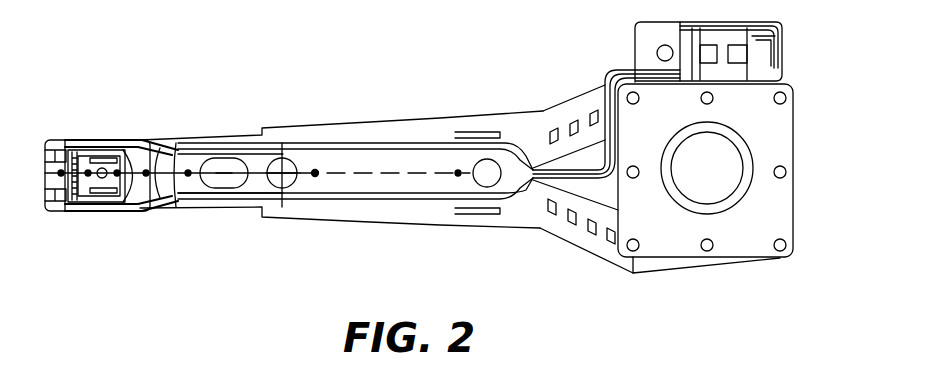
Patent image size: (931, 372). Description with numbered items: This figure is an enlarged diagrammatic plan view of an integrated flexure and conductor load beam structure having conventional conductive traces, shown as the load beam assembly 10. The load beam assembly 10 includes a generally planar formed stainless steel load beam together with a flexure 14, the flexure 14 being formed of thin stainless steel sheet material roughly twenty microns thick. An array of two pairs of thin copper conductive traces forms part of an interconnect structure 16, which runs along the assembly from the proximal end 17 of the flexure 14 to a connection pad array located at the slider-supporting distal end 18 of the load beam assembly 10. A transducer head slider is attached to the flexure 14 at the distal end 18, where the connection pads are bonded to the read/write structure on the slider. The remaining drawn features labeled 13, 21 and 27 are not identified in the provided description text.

The head suspension assembly 10 is at (320, 245).
The electrical contacts 13 is at (315, 173).
The flexible circuit / load beam 14 is at (358, 140).
The flexible cable band 16 is at (583, 180).
The mounting bracket 17 is at (747, 178).
The connector 18 is at (98, 140).
The mounting plate 21 is at (770, 218).
The connector block 27 is at (665, 22).